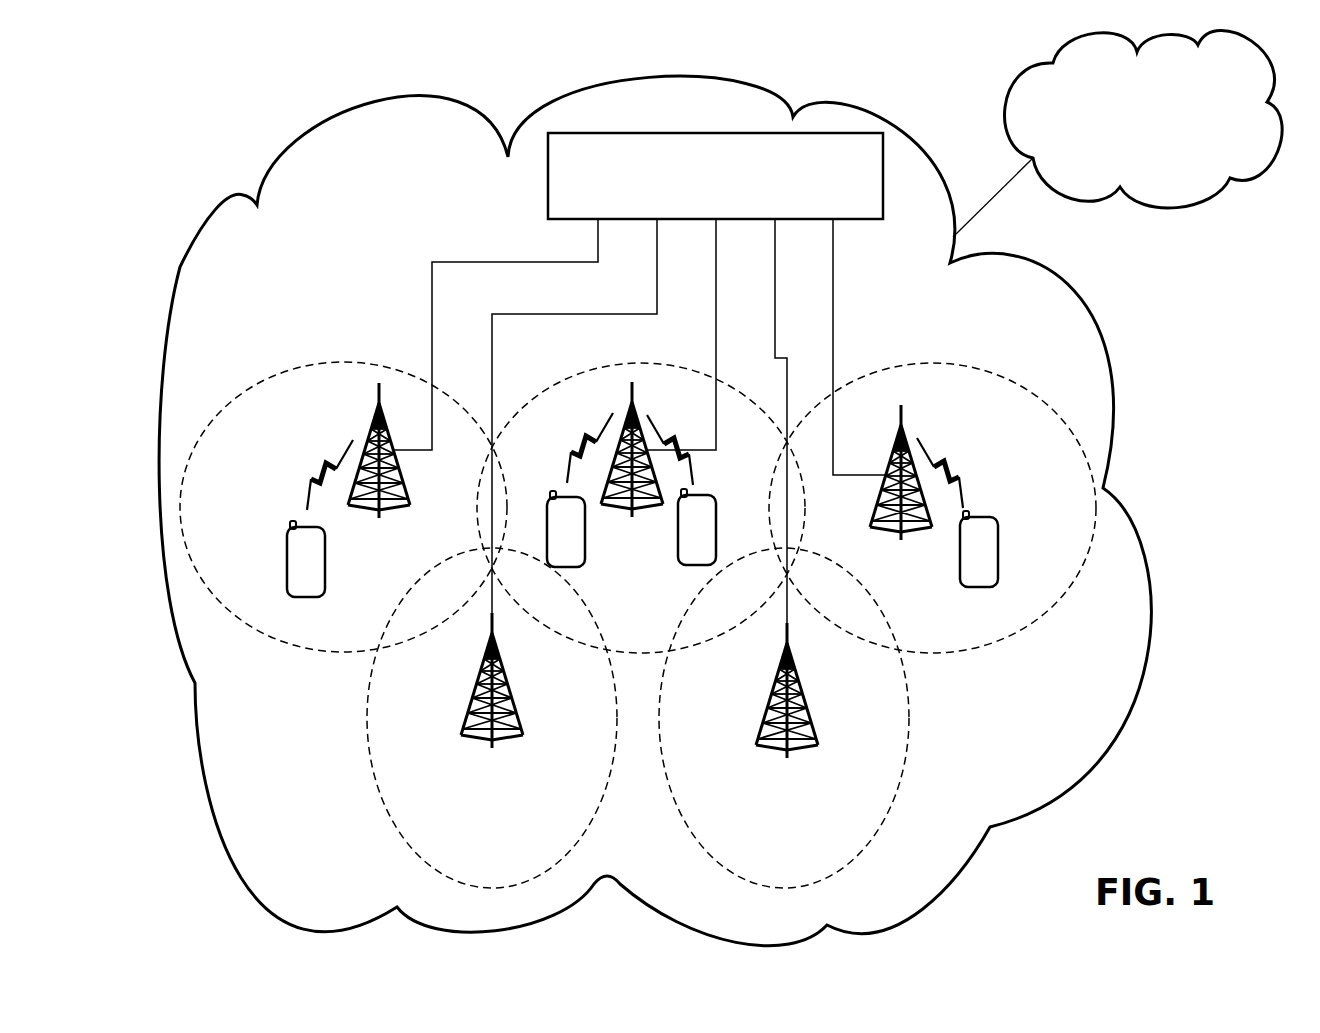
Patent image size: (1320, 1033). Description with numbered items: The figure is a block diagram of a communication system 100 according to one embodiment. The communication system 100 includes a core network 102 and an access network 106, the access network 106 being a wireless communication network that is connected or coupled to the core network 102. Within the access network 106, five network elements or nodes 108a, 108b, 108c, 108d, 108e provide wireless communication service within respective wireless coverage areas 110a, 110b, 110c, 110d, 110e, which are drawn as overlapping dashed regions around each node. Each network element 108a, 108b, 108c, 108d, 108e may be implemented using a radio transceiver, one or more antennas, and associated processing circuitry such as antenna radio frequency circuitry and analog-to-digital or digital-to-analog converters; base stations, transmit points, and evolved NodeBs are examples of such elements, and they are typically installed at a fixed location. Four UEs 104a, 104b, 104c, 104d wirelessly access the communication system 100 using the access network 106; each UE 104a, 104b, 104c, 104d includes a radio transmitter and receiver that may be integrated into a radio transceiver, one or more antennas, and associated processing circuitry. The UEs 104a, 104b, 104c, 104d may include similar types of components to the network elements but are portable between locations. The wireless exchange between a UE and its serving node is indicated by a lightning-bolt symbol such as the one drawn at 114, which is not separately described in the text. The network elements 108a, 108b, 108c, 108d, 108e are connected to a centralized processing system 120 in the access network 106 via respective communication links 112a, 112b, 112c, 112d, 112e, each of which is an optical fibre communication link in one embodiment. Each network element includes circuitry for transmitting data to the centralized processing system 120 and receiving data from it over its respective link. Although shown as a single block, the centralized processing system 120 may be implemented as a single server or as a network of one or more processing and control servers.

The communication system 100 is at (160, 121).
The core network 102 is at (1126, 140).
The UE 104a is at (310, 597).
The UE 104b is at (586, 520).
The UE 104c is at (690, 564).
The UE 104d is at (978, 589).
The access network 106 is at (558, 100).
The network element 108a is at (377, 406).
The network element 108b is at (630, 403).
The network element 108c is at (905, 425).
The network element 108d is at (502, 677).
The network element 108e is at (797, 679).
The wireless coverage area 110a is at (268, 372).
The wireless coverage area 110b is at (560, 372).
The wireless coverage area 110c is at (1010, 380).
The wireless coverage area 110d is at (398, 832).
The wireless coverage area 110e is at (882, 830).
The communication link 112a is at (495, 262).
The communication link 112b is at (718, 310).
The communication link 112c is at (835, 310).
The communication link 112d is at (580, 314).
The communication link 112e is at (777, 310).
The wireless link 114 is at (333, 466).
The centralized processing system 120 is at (696, 202).